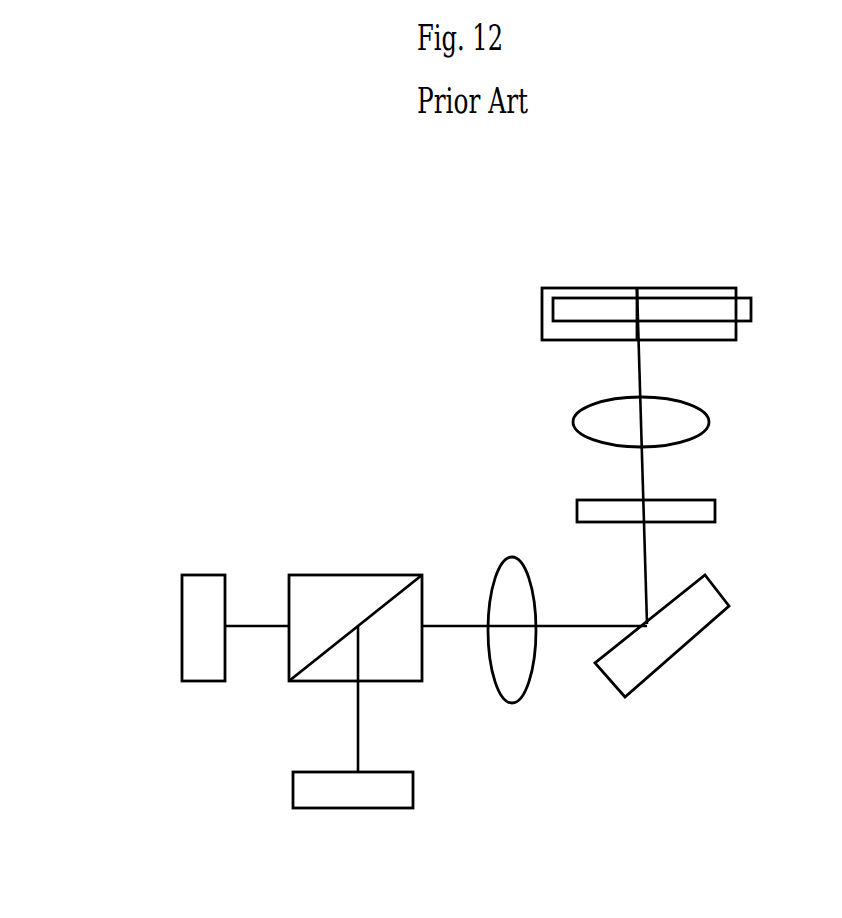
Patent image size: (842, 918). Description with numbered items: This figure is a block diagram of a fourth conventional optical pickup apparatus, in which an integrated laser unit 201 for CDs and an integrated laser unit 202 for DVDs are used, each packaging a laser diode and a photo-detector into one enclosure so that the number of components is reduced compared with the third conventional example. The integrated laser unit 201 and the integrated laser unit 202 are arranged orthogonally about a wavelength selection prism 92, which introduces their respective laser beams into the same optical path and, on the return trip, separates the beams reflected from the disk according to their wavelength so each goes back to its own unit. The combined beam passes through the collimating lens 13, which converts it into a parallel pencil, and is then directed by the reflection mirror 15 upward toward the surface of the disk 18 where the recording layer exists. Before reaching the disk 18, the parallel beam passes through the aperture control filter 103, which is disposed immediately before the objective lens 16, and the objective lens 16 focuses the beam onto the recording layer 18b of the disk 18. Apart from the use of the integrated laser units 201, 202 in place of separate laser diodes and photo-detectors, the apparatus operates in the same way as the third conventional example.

The integrated laser unit 201 is at (203, 575).
The wavelength selection prism 92 is at (348, 575).
The collimating lens 13 is at (508, 557).
The reflection mirror 15 is at (675, 632).
The objective lens 16 is at (597, 400).
The aperture control filter 103 is at (583, 500).
The disk 18 is at (600, 278).
The recording layer 18b is at (655, 288).
The integrated laser unit 202 is at (378, 808).